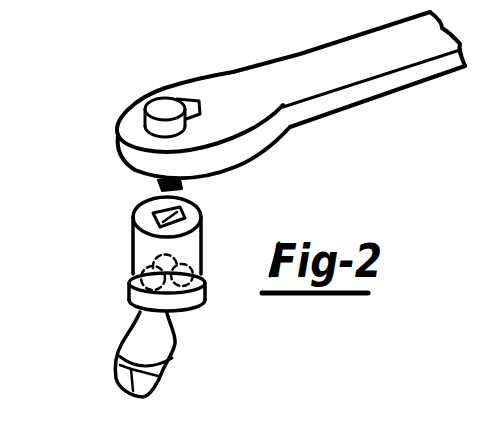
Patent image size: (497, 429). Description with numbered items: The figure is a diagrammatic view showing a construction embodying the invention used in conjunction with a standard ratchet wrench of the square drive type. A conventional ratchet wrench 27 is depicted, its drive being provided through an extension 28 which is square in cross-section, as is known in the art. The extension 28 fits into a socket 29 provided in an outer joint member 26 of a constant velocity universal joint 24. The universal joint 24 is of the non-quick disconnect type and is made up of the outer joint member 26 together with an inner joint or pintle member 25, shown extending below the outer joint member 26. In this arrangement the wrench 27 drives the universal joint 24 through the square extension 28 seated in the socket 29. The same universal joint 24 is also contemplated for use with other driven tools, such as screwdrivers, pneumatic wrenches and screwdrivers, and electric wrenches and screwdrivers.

The constant velocity universal joint 24 is at (94, 186).
The inner joint or pintle member 25 is at (186, 343).
The outer joint member 26 is at (210, 261).
The ratchet wrench 27 is at (378, 62).
The extension 28 is at (180, 188).
The socket 29 is at (186, 205).